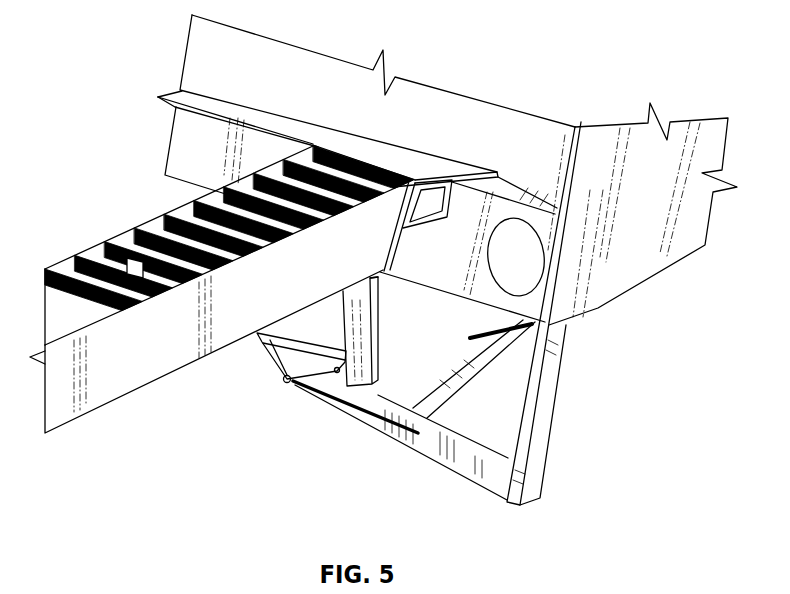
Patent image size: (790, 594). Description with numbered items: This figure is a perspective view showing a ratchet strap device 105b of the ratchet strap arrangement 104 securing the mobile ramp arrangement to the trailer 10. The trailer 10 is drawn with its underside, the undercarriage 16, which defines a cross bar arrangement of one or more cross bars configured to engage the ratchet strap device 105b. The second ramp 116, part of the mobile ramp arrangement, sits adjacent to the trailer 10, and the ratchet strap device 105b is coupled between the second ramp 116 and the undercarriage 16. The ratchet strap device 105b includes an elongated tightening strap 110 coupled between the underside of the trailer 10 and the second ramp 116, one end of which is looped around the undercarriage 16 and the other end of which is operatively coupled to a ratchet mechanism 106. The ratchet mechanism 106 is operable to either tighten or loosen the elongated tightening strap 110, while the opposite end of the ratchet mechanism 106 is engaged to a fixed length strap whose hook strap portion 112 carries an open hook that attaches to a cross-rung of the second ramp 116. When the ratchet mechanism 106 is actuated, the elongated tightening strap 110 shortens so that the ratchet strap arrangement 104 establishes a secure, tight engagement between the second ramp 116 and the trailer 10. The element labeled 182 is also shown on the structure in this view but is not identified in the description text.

The trailer 10 is at (627, 260).
The undercarriage 16 is at (542, 407).
The ratchet strap arrangement 104 is at (373, 426).
The ratchet strap device 105b is at (317, 397).
The ratchet mechanism 106 is at (275, 380).
The elongated tightening strap 110 is at (448, 395).
The hook strap portion 112 is at (133, 255).
The second ramp 116 is at (112, 387).
The top plate 182 is at (407, 163).